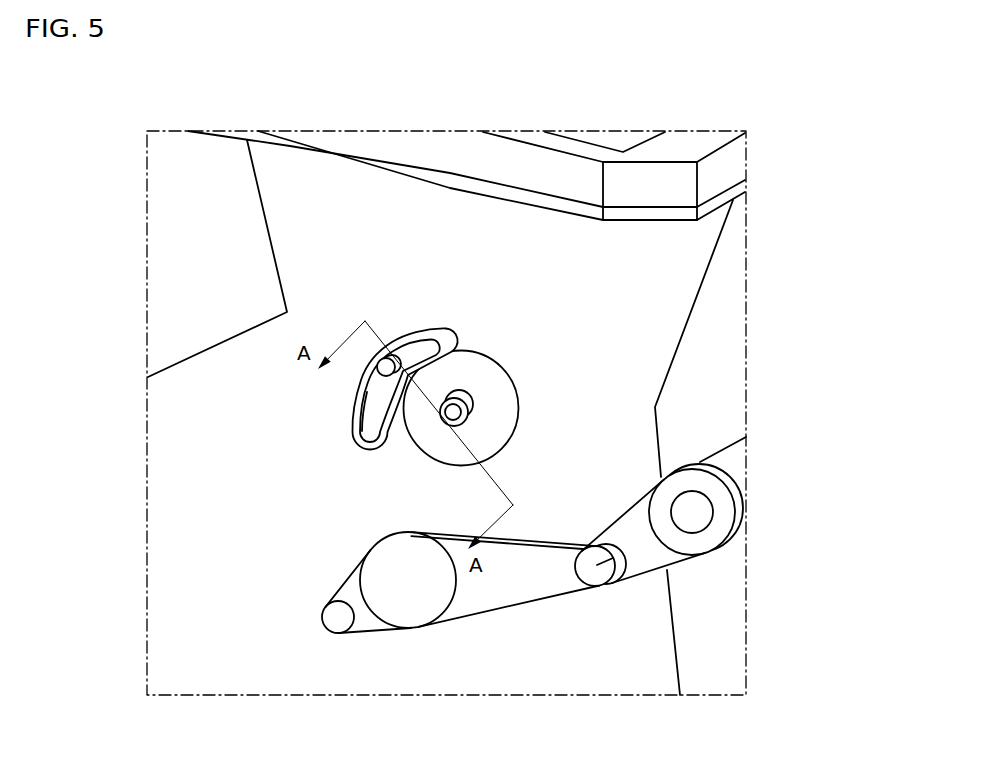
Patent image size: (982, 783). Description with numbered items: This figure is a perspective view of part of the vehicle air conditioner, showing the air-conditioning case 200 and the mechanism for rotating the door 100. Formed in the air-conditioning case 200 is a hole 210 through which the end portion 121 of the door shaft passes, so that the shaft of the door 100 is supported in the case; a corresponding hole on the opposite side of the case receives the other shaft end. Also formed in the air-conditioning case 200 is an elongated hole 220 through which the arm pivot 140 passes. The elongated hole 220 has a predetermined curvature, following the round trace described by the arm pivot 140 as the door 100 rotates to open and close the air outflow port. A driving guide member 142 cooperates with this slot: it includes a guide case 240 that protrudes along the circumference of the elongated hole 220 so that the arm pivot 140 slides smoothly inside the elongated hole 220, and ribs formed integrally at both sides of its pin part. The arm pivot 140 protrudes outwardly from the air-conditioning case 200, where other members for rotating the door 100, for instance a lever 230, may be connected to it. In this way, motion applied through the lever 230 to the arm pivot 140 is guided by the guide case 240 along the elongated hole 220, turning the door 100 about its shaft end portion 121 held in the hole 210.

The air-conditioning case 200 is at (183, 162).
The hole 210 is at (450, 398).
The elongated hole 220 is at (374, 386).
The arm pivot 140 is at (378, 369).
The driving guide member 142 is at (353, 425).
The guide case 240 is at (223, 449).
The door 100 is at (656, 393).
The end portion of the door shaft 121 is at (468, 414).
The lever 230 is at (407, 590).